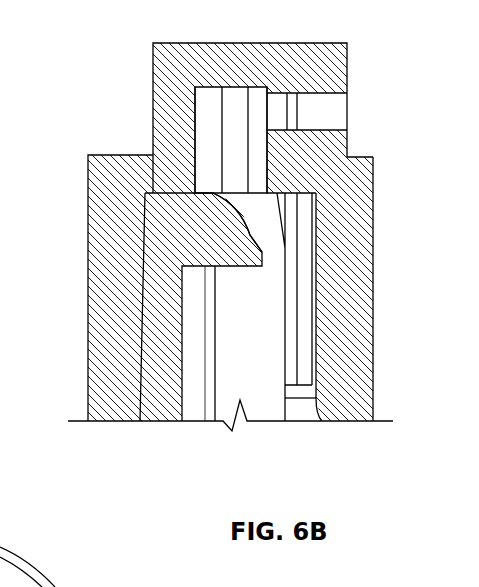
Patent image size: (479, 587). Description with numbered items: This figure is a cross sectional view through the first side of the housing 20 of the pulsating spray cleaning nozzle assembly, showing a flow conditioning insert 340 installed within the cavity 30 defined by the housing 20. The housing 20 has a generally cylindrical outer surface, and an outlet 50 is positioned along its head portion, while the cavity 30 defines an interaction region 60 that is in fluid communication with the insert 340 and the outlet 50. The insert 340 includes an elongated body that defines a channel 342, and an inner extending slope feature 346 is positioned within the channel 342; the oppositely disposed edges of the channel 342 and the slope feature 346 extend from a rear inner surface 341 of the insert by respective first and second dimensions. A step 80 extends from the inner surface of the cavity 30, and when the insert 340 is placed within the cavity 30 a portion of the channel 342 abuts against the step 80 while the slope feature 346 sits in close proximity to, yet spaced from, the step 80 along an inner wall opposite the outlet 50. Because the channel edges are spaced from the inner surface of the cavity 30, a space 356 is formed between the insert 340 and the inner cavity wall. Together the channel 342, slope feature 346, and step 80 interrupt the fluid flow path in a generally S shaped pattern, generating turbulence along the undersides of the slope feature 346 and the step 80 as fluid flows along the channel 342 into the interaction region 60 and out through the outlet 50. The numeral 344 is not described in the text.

The housing 20 is at (347, 392).
The cavity 30 is at (302, 412).
The outlet 50 is at (348, 150).
The interaction region 60 is at (215, 121).
The step 80 is at (292, 190).
The flow conditioning insert 340 is at (145, 283).
The rear inner surface 341 is at (2, 585).
The channel 342 is at (213, 313).
The inner tube 344 is at (290, 265).
The slope feature 346 is at (247, 230).
The space 356 is at (302, 350).